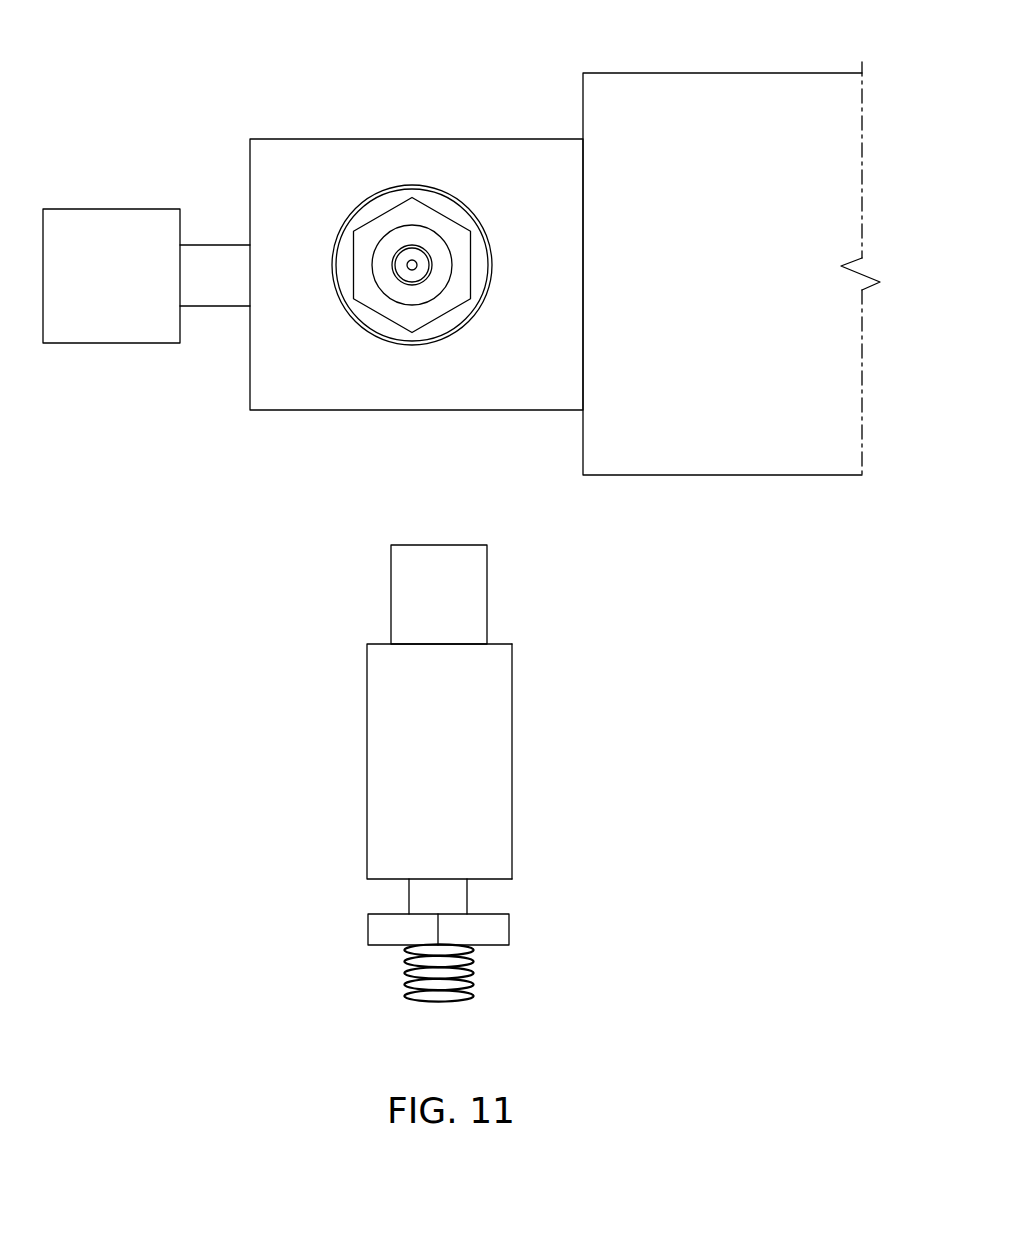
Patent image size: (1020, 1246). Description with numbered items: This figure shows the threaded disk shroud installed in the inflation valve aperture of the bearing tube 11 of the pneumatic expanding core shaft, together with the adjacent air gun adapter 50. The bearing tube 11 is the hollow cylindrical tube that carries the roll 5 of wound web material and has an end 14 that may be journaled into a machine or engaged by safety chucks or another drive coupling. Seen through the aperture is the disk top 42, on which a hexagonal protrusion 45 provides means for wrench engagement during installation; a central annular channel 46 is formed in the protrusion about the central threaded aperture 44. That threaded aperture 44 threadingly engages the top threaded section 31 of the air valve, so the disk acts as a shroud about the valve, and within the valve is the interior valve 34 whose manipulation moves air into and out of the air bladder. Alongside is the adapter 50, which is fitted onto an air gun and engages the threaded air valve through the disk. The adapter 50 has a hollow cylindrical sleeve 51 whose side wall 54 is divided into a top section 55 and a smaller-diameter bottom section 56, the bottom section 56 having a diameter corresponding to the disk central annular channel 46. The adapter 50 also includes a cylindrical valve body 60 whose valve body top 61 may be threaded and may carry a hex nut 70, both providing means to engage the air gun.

The roll 5 is at (762, 90).
The bearing tube 11 is at (529, 138).
The end 14 is at (112, 209).
The disk top 42 is at (362, 313).
The interior valve 34 is at (411, 272).
The central threaded aperture 44 is at (418, 225).
The central annular channel 46 is at (440, 282).
The hexagonal protrusion 45 is at (412, 245).
The top threaded section 31 is at (414, 272).
The adapter 50 is at (582, 557).
The bottom section 56 is at (425, 610).
The top section 55 is at (425, 777).
The hollow cylindrical sleeve 51 is at (472, 761).
The side wall 54 is at (498, 730).
The valve body 60 is at (468, 907).
The hex nut 70 is at (510, 930).
The valve body top 61 is at (450, 1003).